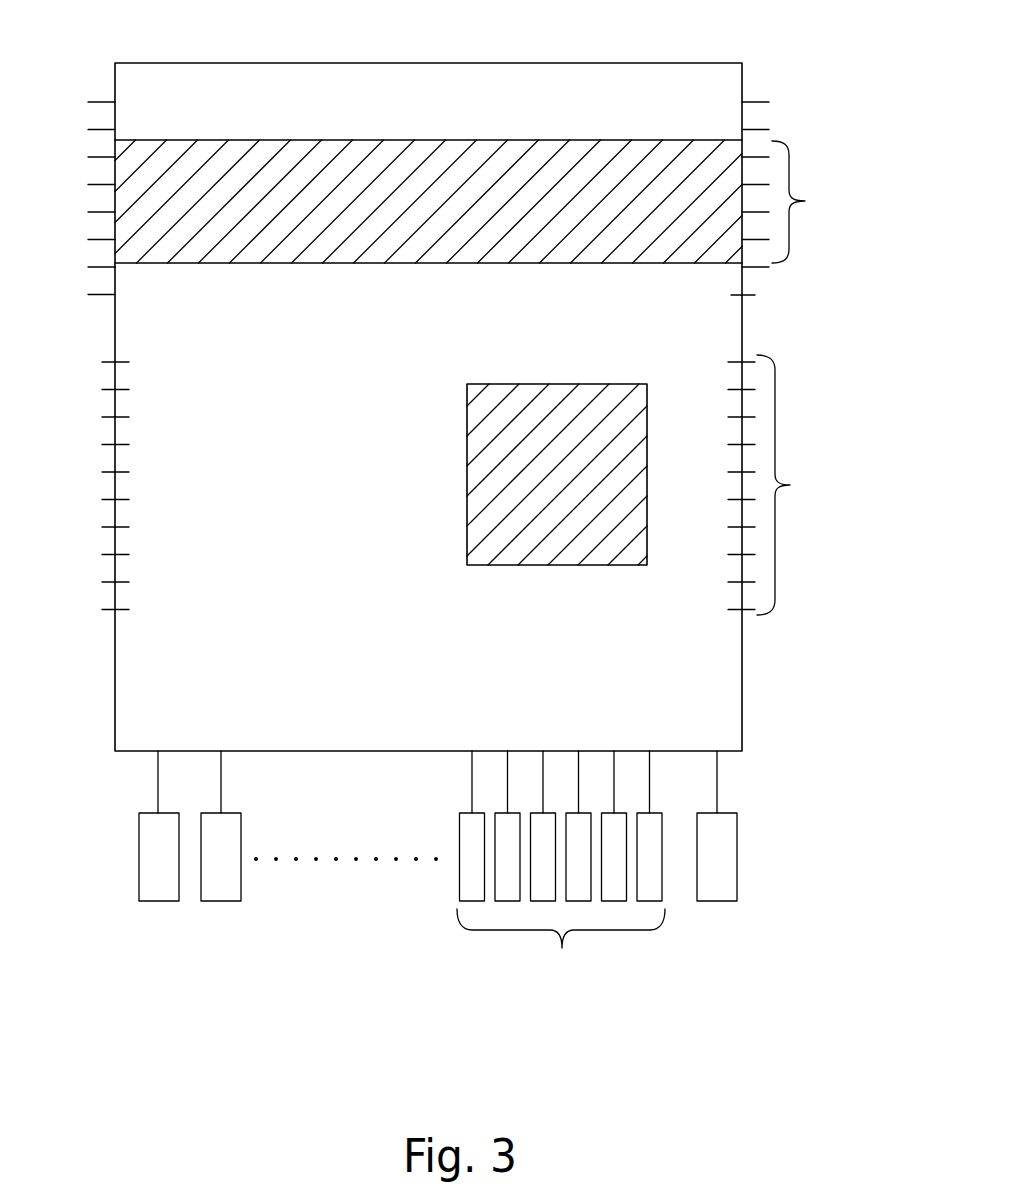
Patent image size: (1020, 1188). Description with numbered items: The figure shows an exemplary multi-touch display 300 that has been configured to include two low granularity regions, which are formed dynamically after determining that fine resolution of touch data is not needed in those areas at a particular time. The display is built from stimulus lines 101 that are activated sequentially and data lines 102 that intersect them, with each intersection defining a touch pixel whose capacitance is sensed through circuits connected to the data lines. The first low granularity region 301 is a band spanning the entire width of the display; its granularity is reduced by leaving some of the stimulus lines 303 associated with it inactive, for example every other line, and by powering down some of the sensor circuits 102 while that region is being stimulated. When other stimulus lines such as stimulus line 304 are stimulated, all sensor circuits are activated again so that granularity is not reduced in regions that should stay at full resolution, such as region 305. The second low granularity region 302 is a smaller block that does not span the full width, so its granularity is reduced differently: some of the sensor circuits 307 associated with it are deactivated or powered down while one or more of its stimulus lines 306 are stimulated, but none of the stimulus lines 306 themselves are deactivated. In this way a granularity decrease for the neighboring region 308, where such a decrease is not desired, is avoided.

The stimulus lines 101 is at (100, 101).
The data lines 102 is at (157, 785).
The multi-touch display 300 is at (787, 64).
The low granularity region 301 is at (718, 265).
The low granularity region 302 is at (556, 384).
The stimulus lines 303 is at (483, 201).
The stimulus line 304 is at (97, 297).
The region 305 is at (391, 305).
The stimulus lines 306 is at (470, 485).
The sensor circuits 307 is at (561, 867).
The region 308 is at (354, 470).